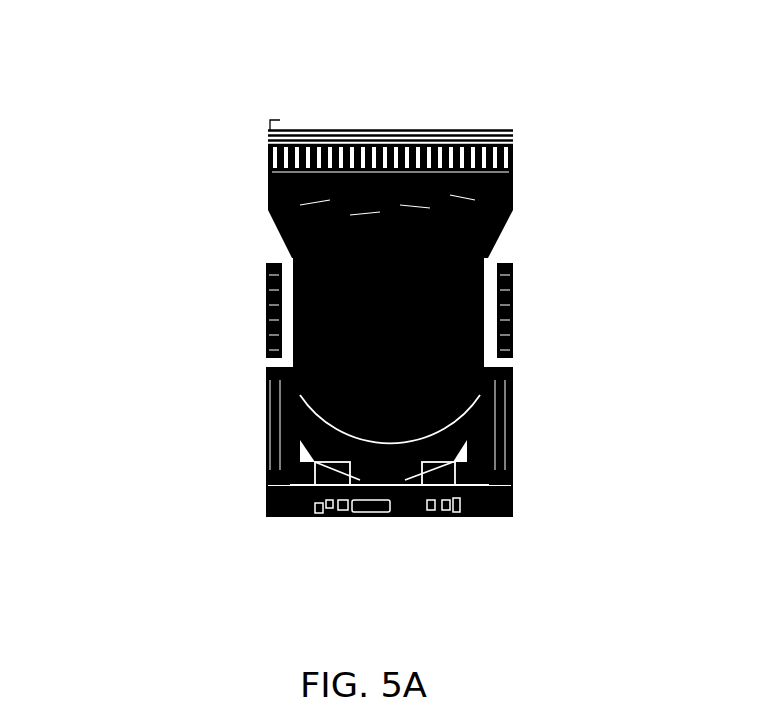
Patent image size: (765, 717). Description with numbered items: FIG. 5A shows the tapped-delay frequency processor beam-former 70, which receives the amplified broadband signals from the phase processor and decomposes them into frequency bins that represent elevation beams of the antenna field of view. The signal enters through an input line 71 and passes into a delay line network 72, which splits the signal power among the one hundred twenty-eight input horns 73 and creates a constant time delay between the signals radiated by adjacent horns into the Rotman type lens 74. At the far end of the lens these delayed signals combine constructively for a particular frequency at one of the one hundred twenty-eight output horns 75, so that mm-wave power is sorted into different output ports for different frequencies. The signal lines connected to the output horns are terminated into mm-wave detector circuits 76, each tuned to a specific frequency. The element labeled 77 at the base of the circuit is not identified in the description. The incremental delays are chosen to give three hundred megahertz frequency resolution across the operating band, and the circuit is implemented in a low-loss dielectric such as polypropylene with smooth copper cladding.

The tapped-delay frequency processor beam-former 70 is at (345, 305).
The input line 71 is at (271, 118).
The delay line network 72 is at (512, 152).
The input horns 73 is at (508, 222).
The Rotman type lens 74 is at (510, 296).
The output horns 75 is at (510, 387).
The mm-wave detector circuits 76 is at (510, 447).
The base connector elements 77 is at (440, 482).